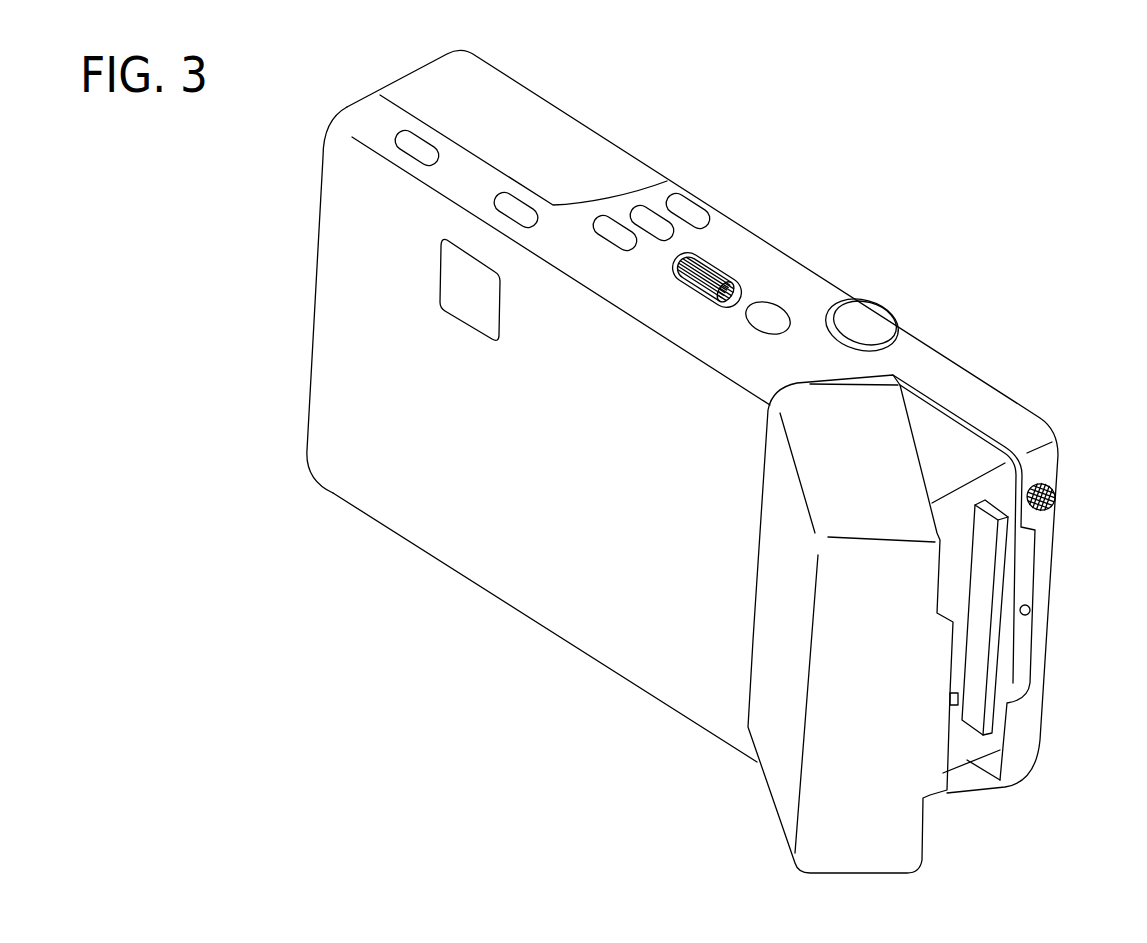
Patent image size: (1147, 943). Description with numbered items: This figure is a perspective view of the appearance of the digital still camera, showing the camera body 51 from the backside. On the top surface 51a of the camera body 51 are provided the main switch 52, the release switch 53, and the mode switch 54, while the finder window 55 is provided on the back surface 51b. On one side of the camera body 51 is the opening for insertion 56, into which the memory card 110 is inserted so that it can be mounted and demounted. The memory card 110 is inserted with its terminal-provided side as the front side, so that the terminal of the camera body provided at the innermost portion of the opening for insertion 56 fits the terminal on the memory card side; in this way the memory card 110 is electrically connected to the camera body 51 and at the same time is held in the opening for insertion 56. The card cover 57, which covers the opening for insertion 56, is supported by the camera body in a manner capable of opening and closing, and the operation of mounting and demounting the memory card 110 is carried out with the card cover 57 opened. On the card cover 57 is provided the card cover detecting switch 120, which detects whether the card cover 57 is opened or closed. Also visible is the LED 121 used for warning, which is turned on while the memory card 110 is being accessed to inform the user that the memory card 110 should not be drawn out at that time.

The camera body 51 is at (790, 233).
The top surface 51a is at (808, 265).
The back surface 51b is at (560, 615).
The main switch 52 is at (713, 263).
The release switch 53 is at (880, 320).
The mode switch 54 is at (693, 197).
The finder window 55 is at (468, 310).
The opening for insertion 56 is at (983, 542).
The card cover 57 is at (785, 785).
The memory card 110 is at (1003, 540).
The card cover detecting switch 120 is at (1032, 608).
The LED 121 is at (1055, 493).